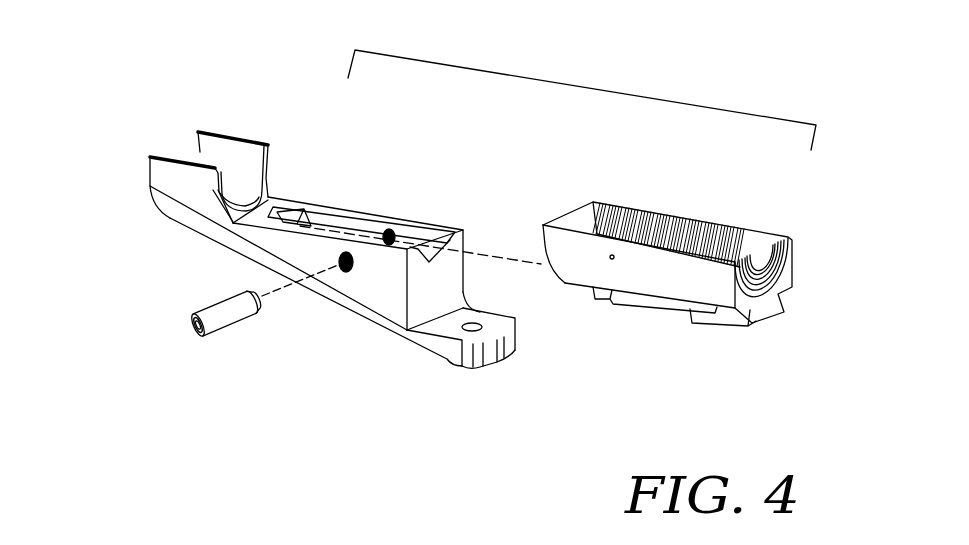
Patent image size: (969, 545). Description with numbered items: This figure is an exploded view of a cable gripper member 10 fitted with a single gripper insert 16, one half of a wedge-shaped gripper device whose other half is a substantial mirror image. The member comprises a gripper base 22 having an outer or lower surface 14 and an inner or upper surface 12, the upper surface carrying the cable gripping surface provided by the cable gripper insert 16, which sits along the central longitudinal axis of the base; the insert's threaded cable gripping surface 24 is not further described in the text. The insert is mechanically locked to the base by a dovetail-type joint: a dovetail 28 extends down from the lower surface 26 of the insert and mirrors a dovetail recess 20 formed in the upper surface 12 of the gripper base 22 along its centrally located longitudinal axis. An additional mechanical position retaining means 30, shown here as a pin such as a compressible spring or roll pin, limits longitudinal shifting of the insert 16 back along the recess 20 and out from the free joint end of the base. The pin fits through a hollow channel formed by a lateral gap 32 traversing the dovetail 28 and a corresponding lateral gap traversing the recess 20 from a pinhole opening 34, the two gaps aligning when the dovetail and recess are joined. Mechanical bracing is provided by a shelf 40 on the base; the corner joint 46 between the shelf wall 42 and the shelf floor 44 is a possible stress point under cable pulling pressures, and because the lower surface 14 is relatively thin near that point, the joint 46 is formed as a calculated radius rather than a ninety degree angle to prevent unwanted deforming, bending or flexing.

The cable gripper member 10 is at (590, 88).
The upper surface 12 is at (320, 198).
The lower surface 14 is at (377, 324).
The cable gripper insert 16 is at (787, 250).
The dovetail recess 20 is at (430, 256).
The gripper base 22 is at (146, 167).
The threaded channel 24 is at (722, 222).
The lower surface of the insert 26 is at (610, 259).
The dovetail 28 is at (743, 323).
The mechanical position retaining means 30 is at (227, 316).
The lateral gap 32 is at (688, 312).
The pinhole opening 34 is at (345, 272).
The shelf 40 is at (192, 192).
The shelf wall 42 is at (267, 180).
The shelf floor 44 is at (289, 205).
The corner joint 46 is at (224, 211).